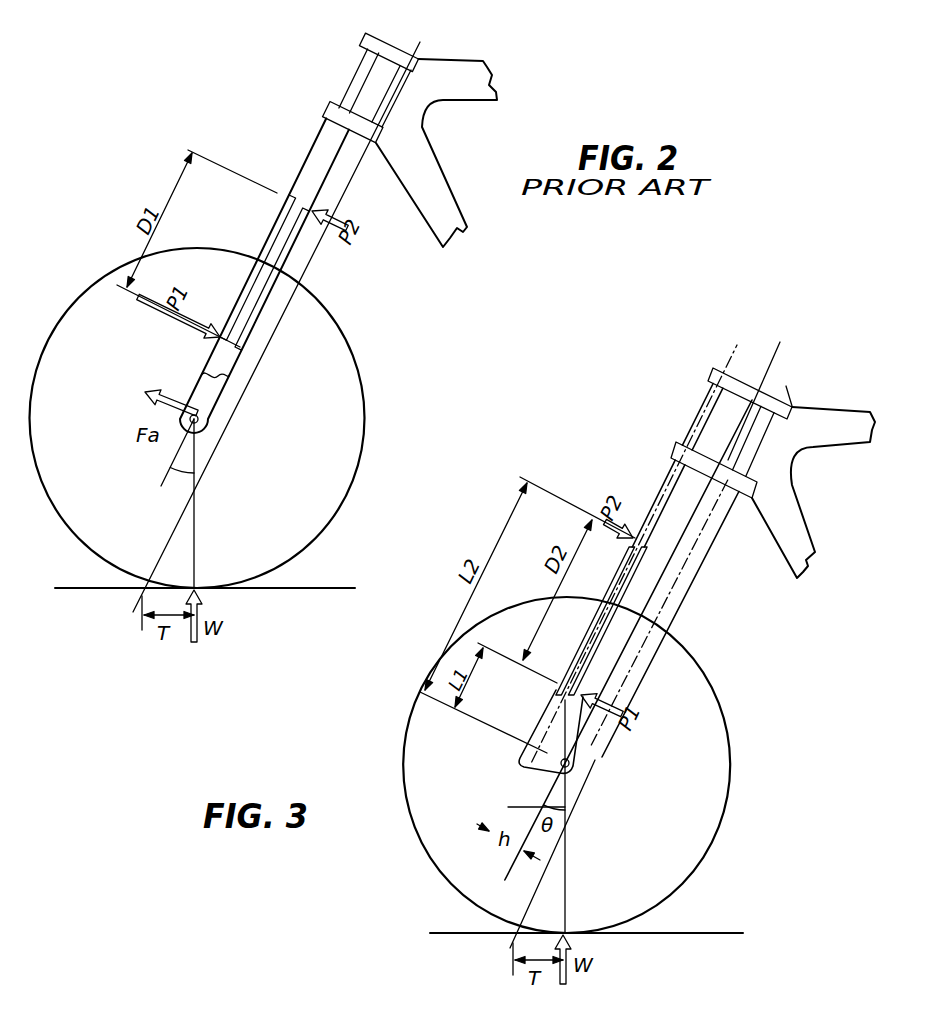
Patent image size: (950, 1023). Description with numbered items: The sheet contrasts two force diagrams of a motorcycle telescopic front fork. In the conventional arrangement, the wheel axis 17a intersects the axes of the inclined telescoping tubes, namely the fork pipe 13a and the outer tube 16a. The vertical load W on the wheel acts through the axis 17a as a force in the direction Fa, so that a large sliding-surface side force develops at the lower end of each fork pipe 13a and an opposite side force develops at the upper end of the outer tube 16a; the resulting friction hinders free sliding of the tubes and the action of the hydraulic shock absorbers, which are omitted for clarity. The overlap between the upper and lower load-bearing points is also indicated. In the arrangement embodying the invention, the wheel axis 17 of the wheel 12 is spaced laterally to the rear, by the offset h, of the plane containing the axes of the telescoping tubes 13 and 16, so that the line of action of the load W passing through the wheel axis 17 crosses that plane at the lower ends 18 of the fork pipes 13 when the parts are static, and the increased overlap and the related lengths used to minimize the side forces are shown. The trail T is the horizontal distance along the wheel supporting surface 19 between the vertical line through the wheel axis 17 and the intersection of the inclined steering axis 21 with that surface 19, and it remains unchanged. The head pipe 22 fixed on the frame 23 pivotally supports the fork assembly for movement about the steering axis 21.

In FIG. 3, the wheel 12 is at (727, 780).
In FIG. 3, the fork pipe 13 is at (663, 485).
In FIG. 2, the fork pipe 13a is at (325, 158).
In FIG. 3, the outer tube 16 is at (642, 557).
In FIG. 2, the outer tube 16a is at (288, 264).
In FIG. 3, the wheel axis 17 is at (569, 765).
In FIG. 2, the wheel axis 17a is at (200, 421).
In FIG. 3, the lower ends of the fork pipes 18 is at (556, 692).
In FIG. 3, the wheel supporting surface 19 is at (723, 932).
In FIG. 3, the steering axis 21 is at (683, 600).
In FIG. 3, the head pipe 22 is at (765, 463).
In FIG. 3, the frame 23 is at (797, 532).